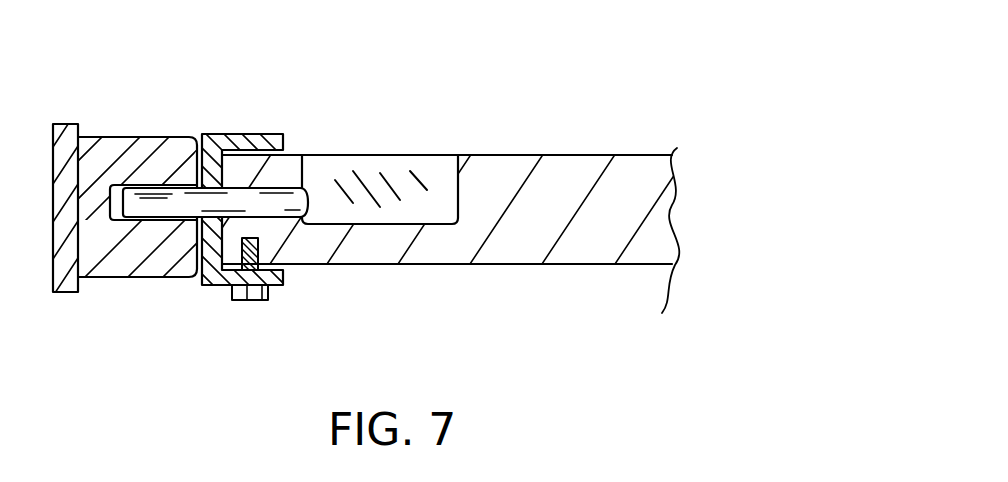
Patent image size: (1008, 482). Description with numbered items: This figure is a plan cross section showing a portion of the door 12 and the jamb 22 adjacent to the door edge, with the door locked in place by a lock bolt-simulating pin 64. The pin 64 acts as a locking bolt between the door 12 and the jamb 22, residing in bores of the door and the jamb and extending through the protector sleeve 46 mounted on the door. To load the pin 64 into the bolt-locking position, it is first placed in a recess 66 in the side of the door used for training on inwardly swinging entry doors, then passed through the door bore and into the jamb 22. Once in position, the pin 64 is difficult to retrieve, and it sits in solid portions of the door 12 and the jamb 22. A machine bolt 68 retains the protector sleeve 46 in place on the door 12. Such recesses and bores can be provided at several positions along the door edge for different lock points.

The door 12 is at (588, 165).
The jamb 22 is at (95, 279).
The protector sleeve 46 is at (230, 133).
The pin 64 is at (183, 205).
The recess 66 is at (342, 176).
The machine bolt 68 is at (250, 300).